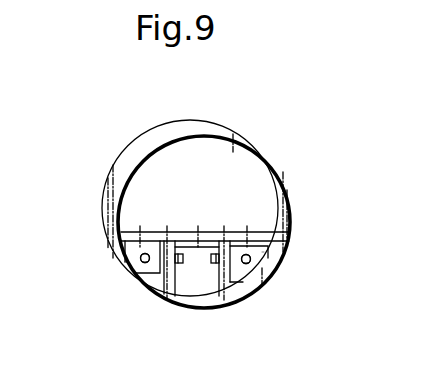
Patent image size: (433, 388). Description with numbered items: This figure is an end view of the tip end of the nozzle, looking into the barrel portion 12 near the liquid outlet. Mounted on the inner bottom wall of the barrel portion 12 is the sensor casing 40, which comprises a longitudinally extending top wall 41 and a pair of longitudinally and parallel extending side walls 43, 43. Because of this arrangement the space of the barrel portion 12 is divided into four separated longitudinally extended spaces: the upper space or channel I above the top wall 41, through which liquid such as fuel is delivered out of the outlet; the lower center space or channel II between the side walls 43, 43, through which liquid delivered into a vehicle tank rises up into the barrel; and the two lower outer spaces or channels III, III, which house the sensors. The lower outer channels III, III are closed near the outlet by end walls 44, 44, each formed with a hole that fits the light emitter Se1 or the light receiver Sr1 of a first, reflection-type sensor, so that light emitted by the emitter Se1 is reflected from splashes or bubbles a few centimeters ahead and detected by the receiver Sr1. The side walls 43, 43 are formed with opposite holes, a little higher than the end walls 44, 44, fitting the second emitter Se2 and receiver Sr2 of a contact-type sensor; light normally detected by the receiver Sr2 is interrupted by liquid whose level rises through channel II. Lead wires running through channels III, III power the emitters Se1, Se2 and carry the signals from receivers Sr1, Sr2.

The barrel portion 12 is at (223, 137).
The top wall 41 is at (158, 232).
The sensor casing 40 is at (222, 228).
The side walls 43 is at (137, 276).
The end walls 44 is at (127, 258).
The light receiver Sr1 is at (140, 260).
The light emitter Se1 is at (250, 262).
The receiver Sr2 is at (183, 259).
The emitter Se2 is at (211, 259).
The upper channel I is at (180, 153).
The lower center channel II is at (191, 298).
The lower outer channels III is at (140, 268).